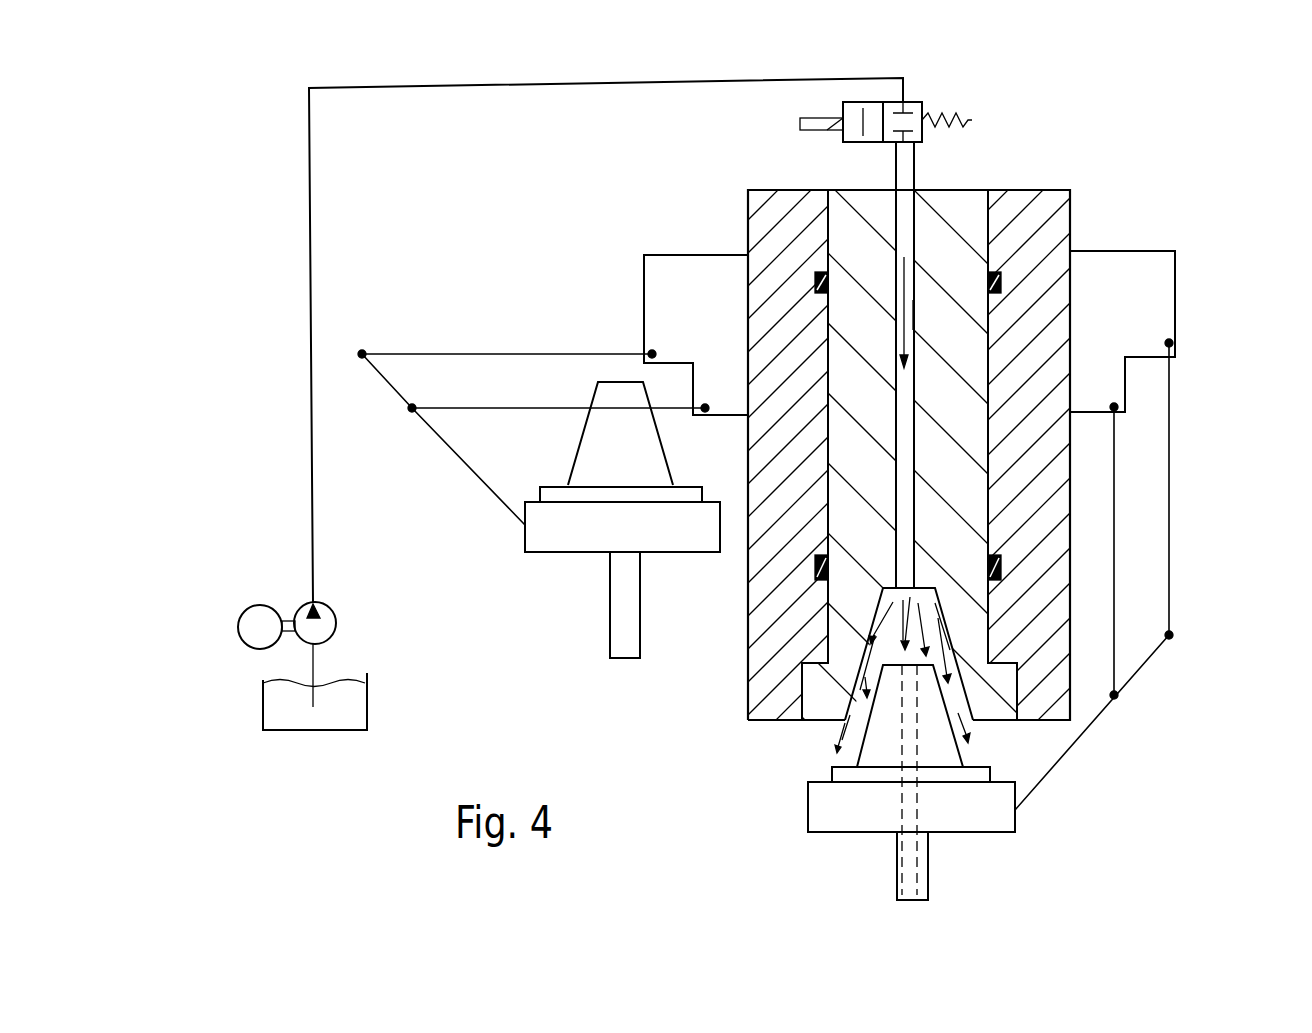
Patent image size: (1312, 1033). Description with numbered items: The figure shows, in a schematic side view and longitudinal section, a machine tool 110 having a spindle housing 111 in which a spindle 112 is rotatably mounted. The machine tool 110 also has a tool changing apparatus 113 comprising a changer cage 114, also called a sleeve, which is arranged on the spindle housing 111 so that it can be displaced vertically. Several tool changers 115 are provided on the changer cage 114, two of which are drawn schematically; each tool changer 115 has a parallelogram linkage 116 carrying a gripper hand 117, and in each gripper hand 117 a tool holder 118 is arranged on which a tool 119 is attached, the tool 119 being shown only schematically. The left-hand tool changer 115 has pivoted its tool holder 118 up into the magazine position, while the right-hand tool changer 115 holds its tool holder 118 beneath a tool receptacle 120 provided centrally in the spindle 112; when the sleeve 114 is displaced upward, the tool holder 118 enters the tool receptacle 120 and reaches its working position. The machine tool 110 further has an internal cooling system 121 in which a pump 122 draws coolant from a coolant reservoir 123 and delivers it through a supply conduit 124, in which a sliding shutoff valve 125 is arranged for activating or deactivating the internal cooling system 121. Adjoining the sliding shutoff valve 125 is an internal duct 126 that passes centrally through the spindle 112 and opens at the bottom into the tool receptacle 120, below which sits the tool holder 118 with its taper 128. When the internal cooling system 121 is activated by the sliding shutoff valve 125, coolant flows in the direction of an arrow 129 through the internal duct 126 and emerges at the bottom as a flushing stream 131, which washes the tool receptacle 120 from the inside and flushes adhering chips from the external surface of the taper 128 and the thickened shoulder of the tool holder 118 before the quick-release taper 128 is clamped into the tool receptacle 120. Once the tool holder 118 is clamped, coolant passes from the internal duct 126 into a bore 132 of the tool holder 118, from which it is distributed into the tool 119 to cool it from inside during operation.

The machine tool 110 is at (1133, 76).
The spindle housing 111 is at (1037, 202).
The spindle 112 is at (957, 205).
The tool changing apparatus 113 is at (516, 249).
The changer cage 114 is at (688, 252).
The tool changer 115 is at (493, 383).
The parallelogram linkage 116 is at (1142, 510).
The gripper hand 117 is at (1017, 810).
The tool holder 118 is at (832, 772).
The tool 119 is at (897, 862).
The tool receptacle 120 is at (947, 628).
The internal cooling system 121 is at (251, 319).
The pump 122 is at (237, 623).
The coolant reservoir 123 is at (280, 703).
The supply conduit 124 is at (309, 147).
The sliding shutoff valve 125 is at (865, 102).
The internal duct 126 is at (903, 233).
The taper 128 is at (933, 748).
The arrow 129 is at (913, 313).
The flushing stream 131 is at (883, 645).
The bore 132 is at (912, 802).